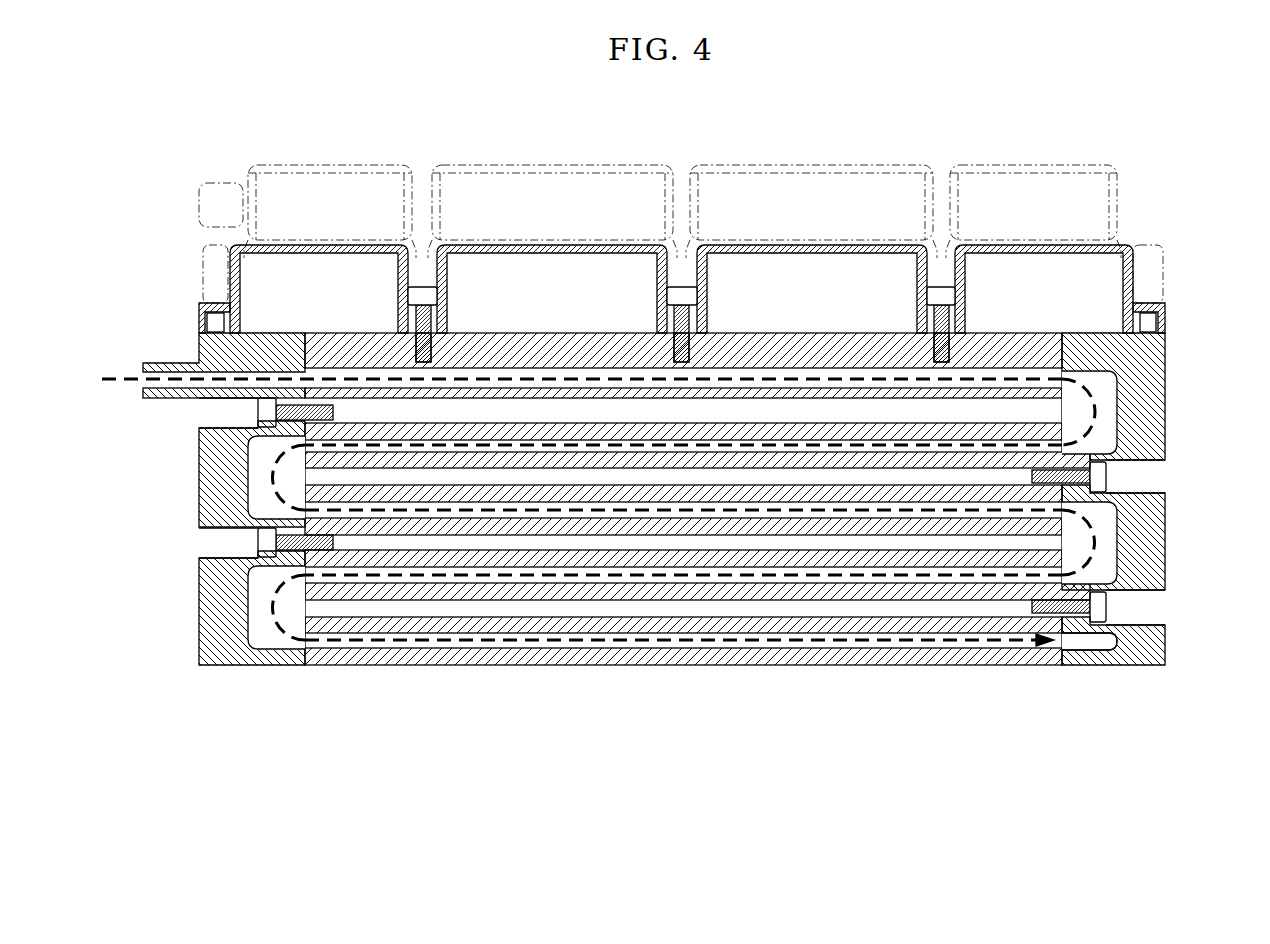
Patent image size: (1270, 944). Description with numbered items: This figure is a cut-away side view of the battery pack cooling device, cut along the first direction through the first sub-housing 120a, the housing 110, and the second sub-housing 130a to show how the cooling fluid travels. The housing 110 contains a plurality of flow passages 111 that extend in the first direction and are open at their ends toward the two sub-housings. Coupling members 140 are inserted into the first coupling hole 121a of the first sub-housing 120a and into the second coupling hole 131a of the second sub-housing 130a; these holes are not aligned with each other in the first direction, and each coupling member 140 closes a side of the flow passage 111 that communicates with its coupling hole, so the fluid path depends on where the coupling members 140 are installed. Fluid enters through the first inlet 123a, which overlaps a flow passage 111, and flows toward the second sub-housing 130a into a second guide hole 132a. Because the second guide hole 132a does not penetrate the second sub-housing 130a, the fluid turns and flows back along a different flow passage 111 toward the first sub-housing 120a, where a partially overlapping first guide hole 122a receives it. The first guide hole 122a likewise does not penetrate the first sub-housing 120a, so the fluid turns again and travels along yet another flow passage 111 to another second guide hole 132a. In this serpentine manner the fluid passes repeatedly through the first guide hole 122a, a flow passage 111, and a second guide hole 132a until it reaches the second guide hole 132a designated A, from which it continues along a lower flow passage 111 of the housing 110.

The housing 110 is at (676, 545).
The flow passages 111 is at (833, 513).
The first sub-housing 120a is at (202, 514).
The first coupling hole 121a is at (238, 410).
The first guide hole 122a is at (265, 478).
The first inlet 123a is at (178, 372).
The second sub-housing 130a is at (1144, 529).
The second coupling hole 131a is at (1132, 478).
The second guide hole 132a is at (1100, 410).
The coupling members 140 is at (267, 428).
The second guide hole corresponding to reference numeral A is at (1095, 643).